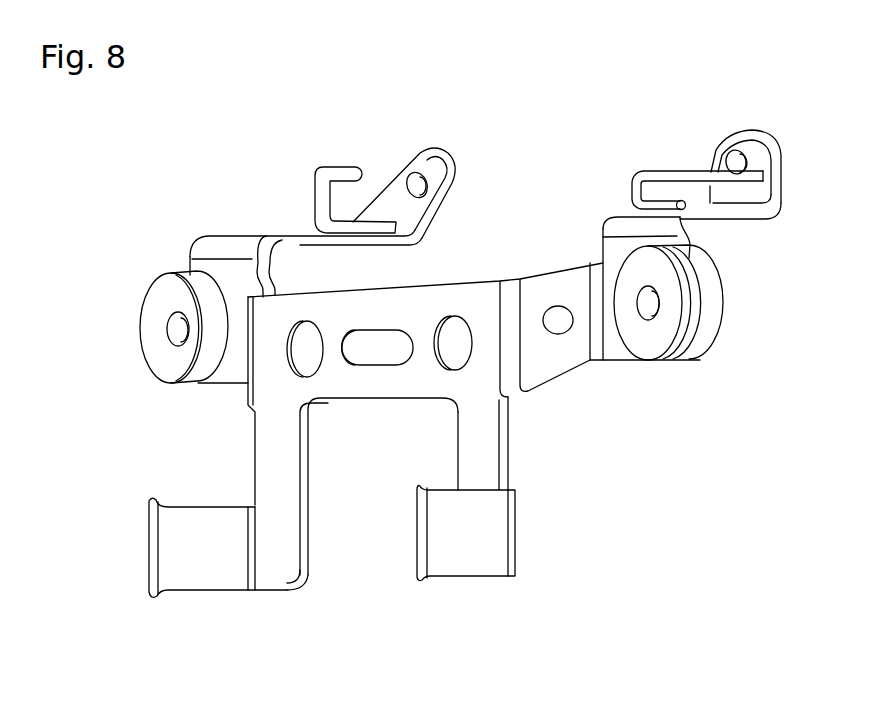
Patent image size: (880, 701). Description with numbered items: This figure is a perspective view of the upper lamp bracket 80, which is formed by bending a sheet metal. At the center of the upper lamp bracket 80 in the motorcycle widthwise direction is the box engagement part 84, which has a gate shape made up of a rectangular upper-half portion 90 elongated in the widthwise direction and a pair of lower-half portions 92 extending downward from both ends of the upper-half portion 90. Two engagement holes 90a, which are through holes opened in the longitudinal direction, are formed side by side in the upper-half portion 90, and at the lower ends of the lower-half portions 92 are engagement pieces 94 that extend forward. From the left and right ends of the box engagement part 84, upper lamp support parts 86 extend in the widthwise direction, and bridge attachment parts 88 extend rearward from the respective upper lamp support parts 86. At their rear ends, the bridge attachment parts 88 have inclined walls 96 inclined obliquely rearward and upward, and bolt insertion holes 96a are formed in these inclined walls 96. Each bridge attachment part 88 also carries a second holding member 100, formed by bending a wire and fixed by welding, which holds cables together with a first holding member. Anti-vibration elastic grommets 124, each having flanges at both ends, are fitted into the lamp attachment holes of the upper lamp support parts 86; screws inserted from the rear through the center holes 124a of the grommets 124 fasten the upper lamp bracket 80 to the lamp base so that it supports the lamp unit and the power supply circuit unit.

The upper lamp bracket 80 is at (203, 226).
The box engagement part 84 is at (442, 627).
The upper lamp support part 86 is at (230, 373).
The bridge attachment part 88 is at (297, 233).
The upper-half portion 90 is at (375, 380).
The engagement hole 90a is at (312, 340).
The lower-half portion 92 is at (285, 518).
The engagement piece 94 is at (197, 572).
The inclined wall 96 is at (400, 183).
The bolt insertion hole 96a is at (430, 180).
The second holding member 100 is at (338, 170).
The anti-vibration elastic grommet 124 is at (163, 293).
The center hole 124a is at (173, 345).